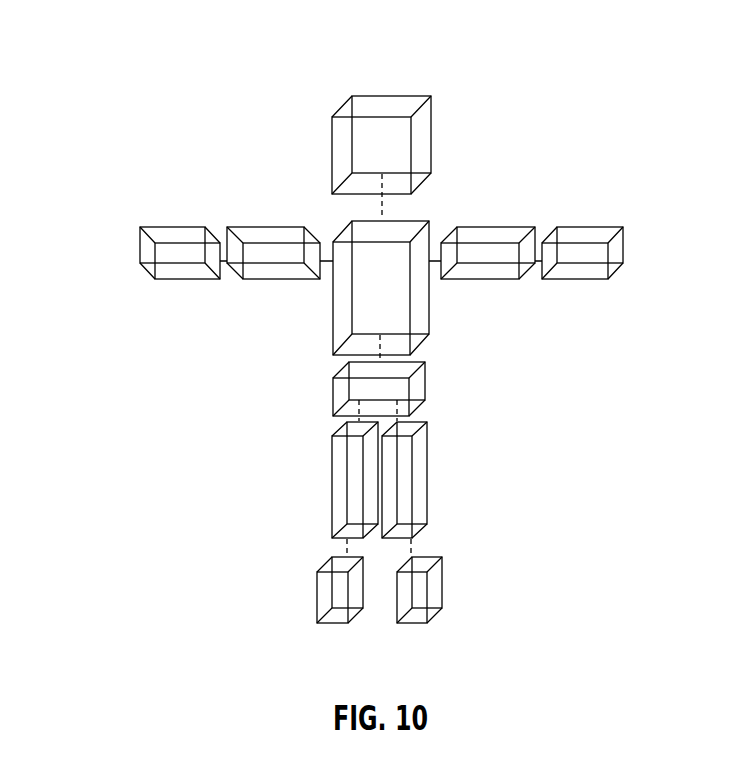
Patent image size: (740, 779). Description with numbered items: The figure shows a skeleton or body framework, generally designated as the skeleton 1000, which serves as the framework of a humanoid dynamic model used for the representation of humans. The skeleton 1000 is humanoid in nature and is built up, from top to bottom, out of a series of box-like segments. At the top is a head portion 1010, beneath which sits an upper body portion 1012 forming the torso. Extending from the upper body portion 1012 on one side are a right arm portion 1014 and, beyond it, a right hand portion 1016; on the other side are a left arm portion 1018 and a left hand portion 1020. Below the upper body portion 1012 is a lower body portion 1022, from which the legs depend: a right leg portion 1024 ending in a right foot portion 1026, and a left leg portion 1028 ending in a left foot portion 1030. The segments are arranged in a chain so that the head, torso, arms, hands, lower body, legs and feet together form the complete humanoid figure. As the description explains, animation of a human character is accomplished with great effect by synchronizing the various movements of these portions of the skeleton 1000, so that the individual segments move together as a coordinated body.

The skeleton 1000 is at (132, 38).
The head portion 1010 is at (332, 155).
The upper body portion 1012 is at (431, 321).
The right arm portion 1014 is at (496, 226).
The right hand portion 1016 is at (588, 226).
The left arm portion 1018 is at (282, 226).
The left hand portion 1020 is at (160, 226).
The lower body portion 1022 is at (429, 378).
The right leg portion 1024 is at (427, 490).
The right foot portion 1026 is at (442, 598).
The left leg portion 1028 is at (332, 490).
The left foot portion 1030 is at (317, 598).